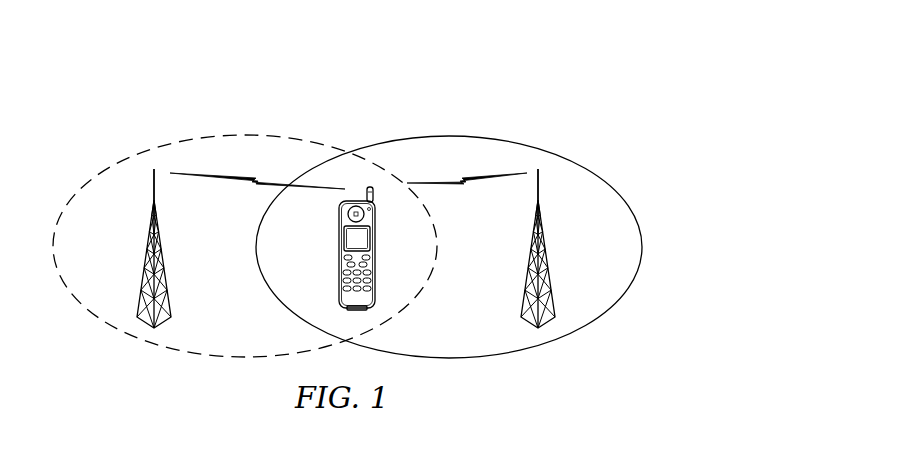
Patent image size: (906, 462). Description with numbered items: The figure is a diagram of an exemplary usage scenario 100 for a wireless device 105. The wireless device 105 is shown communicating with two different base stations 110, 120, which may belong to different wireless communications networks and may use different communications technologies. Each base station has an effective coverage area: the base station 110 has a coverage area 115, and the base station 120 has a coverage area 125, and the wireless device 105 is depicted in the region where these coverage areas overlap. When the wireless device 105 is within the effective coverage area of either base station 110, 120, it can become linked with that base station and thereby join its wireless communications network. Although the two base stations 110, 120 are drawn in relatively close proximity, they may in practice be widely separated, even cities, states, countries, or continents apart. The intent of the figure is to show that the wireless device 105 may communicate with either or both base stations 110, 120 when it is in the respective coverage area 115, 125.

The usage scenario 100 is at (528, 92).
The wireless device 105 is at (339, 263).
The base station 110 is at (146, 252).
The coverage area 115 is at (167, 352).
The base station 120 is at (546, 253).
The coverage area 125 is at (525, 352).